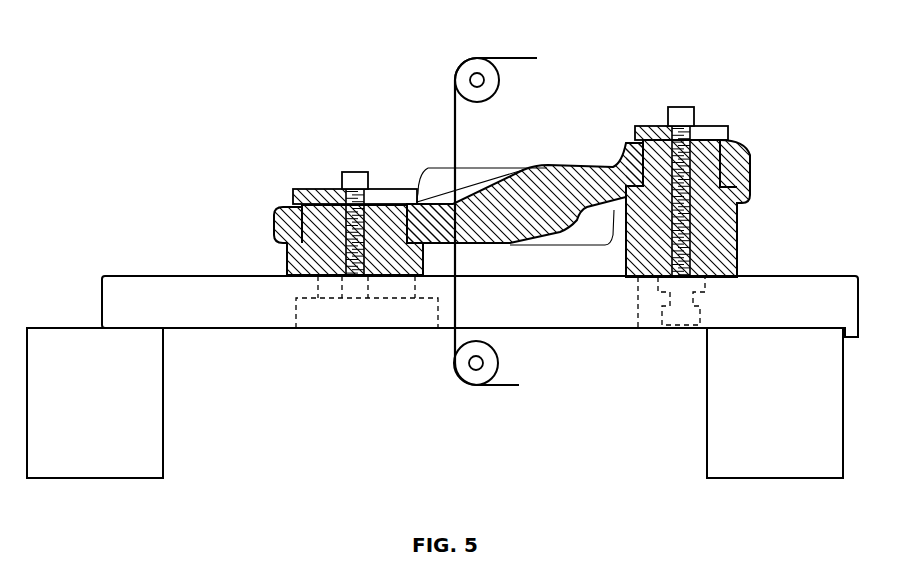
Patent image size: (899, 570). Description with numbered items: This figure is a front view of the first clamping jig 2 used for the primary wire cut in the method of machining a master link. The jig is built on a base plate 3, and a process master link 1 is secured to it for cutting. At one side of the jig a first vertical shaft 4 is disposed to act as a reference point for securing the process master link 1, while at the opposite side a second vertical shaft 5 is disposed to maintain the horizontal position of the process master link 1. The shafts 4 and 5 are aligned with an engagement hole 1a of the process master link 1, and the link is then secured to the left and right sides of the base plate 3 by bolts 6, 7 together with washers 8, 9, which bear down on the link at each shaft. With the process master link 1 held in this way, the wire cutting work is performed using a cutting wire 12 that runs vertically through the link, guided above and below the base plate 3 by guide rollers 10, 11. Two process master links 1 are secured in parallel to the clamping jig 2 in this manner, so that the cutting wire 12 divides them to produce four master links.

The process master link 1 is at (569, 156).
The engagement hole 1a is at (392, 222).
The first clamping jig 2 is at (738, 162).
The base plate 3 is at (828, 295).
The first vertical shaft 4 is at (743, 159).
The second vertical shaft 5 is at (298, 228).
The bolt 6 is at (678, 112).
The bolt 7 is at (356, 175).
The washer 8 is at (652, 128).
The washer 9 is at (318, 192).
The guide roller 10 is at (470, 67).
The guide roller 11 is at (472, 378).
The cutting wire 12 is at (452, 120).